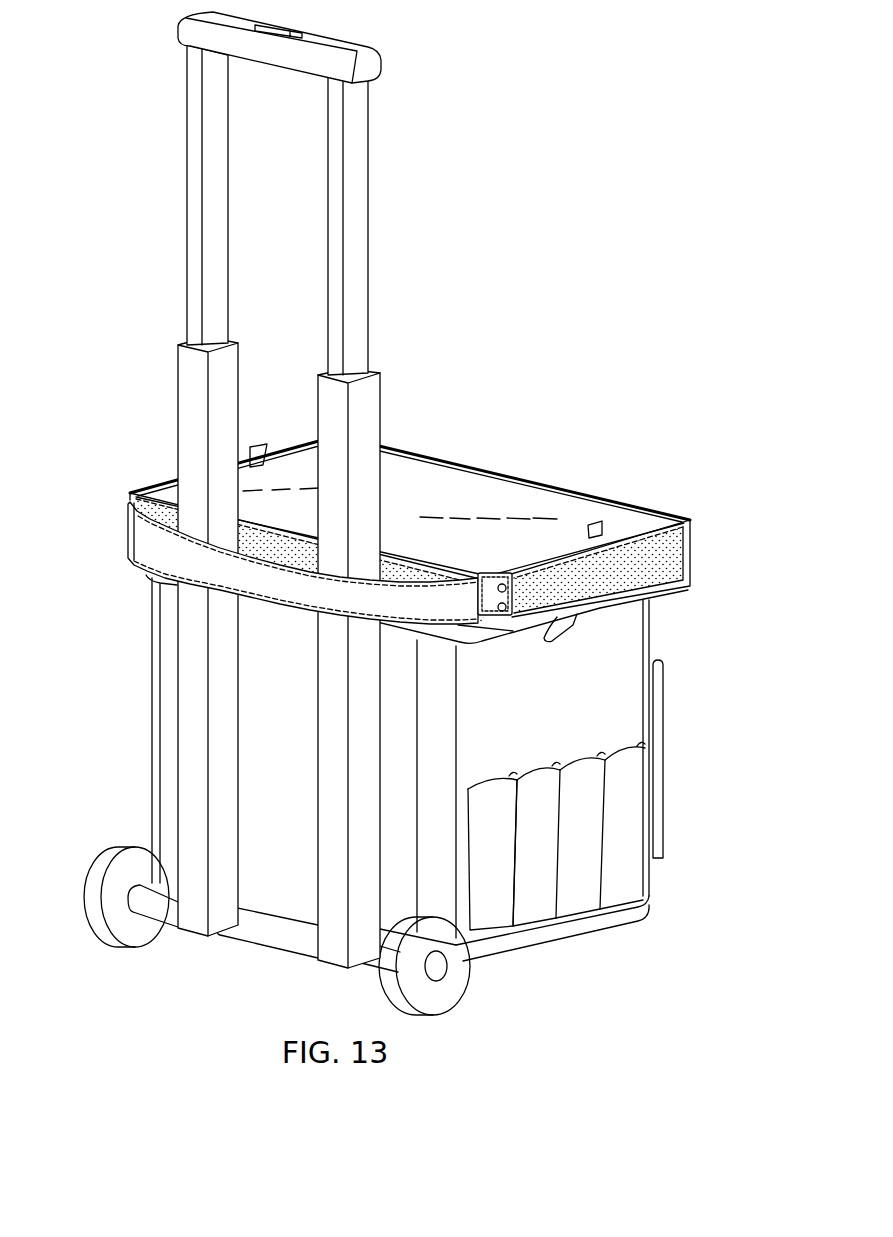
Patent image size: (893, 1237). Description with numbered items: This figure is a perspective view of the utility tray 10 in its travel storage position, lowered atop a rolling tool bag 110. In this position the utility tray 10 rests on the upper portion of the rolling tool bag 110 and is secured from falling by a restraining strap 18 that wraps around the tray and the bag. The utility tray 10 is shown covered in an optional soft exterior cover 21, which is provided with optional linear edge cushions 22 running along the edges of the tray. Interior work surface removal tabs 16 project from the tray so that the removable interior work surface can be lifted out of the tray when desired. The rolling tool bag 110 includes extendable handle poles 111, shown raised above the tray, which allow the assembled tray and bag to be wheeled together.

The utility tray 10 is at (448, 533).
The interior work surface removal tabs 16 is at (600, 521).
The restraining strap 18 is at (135, 535).
The soft exterior cover 21 is at (670, 560).
The linear edge cushions 22 is at (683, 527).
The rolling tool bag 110 is at (617, 660).
The telescoping handle poles 111 is at (335, 243).